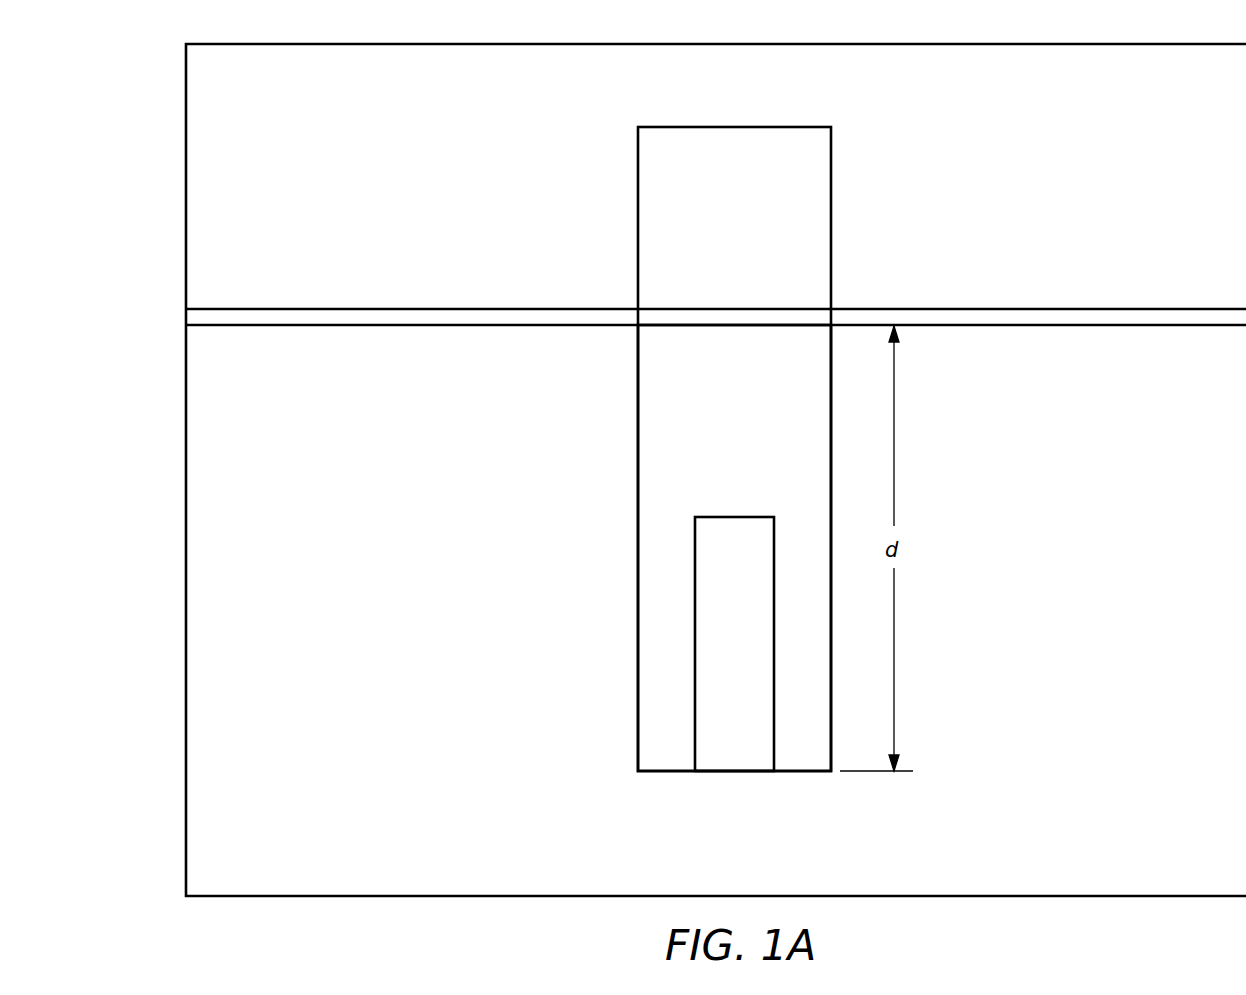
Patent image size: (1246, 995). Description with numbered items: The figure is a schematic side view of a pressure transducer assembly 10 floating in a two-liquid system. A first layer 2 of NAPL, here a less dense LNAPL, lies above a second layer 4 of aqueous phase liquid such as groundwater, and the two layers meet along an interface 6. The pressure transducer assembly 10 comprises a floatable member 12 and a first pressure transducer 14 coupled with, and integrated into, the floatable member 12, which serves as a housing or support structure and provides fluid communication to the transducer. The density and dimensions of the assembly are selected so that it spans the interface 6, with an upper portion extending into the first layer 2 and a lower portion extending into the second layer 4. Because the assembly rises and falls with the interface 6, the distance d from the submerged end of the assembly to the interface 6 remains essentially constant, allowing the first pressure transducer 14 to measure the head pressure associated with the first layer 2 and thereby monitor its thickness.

The first layer 2 is at (1083, 237).
The second layer 4 is at (1097, 411).
The interface 6 is at (471, 318).
The pressure transducer assembly 10 is at (573, 159).
The floatable member 12 is at (680, 445).
The first pressure transducer 14 is at (723, 693).